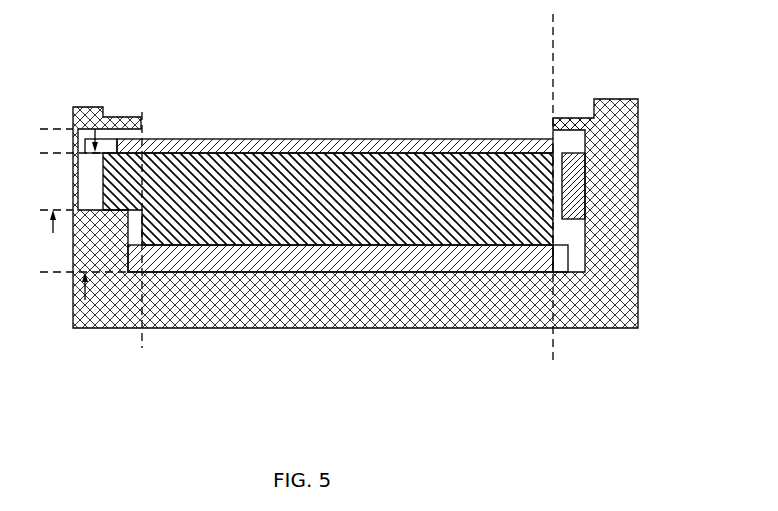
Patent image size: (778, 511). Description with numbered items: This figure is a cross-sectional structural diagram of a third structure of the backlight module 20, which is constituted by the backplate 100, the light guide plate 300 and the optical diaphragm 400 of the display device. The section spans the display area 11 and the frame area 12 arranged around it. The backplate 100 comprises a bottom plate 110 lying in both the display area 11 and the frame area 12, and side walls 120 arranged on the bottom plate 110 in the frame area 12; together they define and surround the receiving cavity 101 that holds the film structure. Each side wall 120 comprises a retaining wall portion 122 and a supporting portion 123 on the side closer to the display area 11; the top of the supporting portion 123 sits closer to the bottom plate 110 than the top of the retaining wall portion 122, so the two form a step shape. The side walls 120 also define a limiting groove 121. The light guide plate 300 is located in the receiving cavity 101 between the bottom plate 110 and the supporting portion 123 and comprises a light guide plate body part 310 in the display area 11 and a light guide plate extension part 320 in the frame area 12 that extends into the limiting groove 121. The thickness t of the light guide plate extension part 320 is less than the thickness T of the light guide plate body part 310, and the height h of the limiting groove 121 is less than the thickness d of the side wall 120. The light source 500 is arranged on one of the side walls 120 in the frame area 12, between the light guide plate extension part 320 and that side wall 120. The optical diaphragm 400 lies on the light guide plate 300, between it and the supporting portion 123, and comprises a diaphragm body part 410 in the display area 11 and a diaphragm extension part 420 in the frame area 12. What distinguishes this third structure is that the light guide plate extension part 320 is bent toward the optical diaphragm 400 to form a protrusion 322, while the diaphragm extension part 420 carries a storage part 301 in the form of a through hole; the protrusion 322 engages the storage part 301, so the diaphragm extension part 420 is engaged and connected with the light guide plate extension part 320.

The backplate 100 is at (388, 205).
The bottom plate 110 is at (617, 303).
The side wall 120 is at (360, 177).
The limiting groove 121 is at (82, 196).
The retaining wall portion 122 is at (627, 115).
The supporting portion 123 is at (562, 120).
The light guide plate 300 is at (404, 285).
The light guide plate body part 310 is at (230, 247).
The light guide plate extension part 320 is at (131, 200).
The protrusion 322 is at (112, 153).
The storage part 301 is at (115, 138).
The optical diaphragm 400 is at (319, 103).
The diaphragm body part 410 is at (220, 147).
The diaphragm extension part 420 is at (109, 150).
The light source 500 is at (577, 180).
The backlight module 20 is at (290, 74).
The display area 11 is at (397, 119).
The receiving cavity 101 is at (480, 116).
The frame area 12 is at (582, 44).
The height of the limiting groove h is at (52, 120).
The thickness of the side wall d is at (87, 98).
The thickness of the light guide plate body part T is at (325, 125).
The thickness of the light guide plate extension part t is at (97, 219).